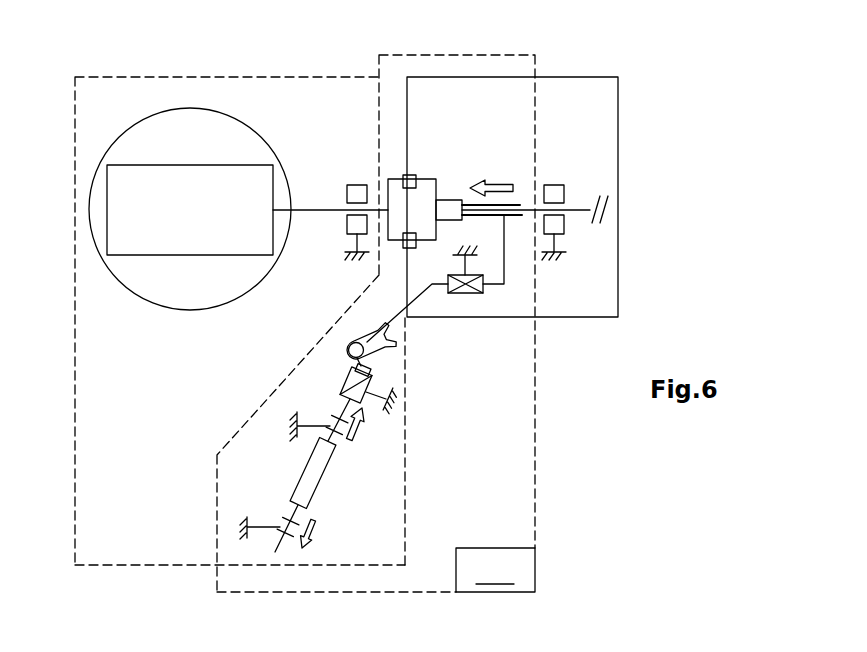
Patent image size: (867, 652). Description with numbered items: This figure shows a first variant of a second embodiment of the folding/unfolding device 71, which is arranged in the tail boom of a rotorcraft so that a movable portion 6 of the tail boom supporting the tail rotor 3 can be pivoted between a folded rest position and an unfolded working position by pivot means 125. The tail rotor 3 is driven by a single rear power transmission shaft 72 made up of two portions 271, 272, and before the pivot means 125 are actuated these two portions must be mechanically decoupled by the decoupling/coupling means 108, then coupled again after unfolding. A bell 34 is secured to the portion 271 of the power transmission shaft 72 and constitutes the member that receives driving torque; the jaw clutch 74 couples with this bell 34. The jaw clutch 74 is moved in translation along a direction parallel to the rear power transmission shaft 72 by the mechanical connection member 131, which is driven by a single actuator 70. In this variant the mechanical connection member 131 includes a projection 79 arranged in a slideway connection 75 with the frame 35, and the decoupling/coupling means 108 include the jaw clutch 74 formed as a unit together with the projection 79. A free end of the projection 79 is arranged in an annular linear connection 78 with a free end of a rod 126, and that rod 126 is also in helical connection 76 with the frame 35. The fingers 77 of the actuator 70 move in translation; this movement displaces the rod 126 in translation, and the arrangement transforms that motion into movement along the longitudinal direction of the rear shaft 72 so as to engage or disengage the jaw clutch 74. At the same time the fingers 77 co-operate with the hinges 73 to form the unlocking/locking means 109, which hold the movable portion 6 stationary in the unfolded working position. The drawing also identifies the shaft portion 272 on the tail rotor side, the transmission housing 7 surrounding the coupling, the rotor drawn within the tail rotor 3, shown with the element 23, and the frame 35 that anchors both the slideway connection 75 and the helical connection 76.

The tail rotor 3 is at (195, 123).
The rotor 23 is at (150, 177).
The movable portion 6 is at (85, 479).
The transmission module 7 is at (557, 308).
The bell 34 is at (403, 174).
The frame 35 is at (472, 248).
The actuator 70 is at (320, 480).
The folding/unfolding device 71 is at (535, 508).
The rear power transmission shaft 72 is at (578, 208).
The hinges 73 is at (358, 421).
The jaw clutch 74 is at (418, 176).
The slideway connection 75 is at (452, 294).
The helical connection 76 is at (372, 368).
The fingers 77 is at (330, 421).
The annular linear connection 78 is at (367, 330).
The projection 79 is at (503, 262).
The decoupling/coupling means 108 is at (507, 285).
The unlocking/locking means 109 is at (377, 497).
The pivot means 125 is at (495, 570).
The rod 126 is at (347, 360).
The mechanical connection member 131 is at (411, 388).
The portion of the power transmission shaft 271 is at (523, 206).
The portion of the power transmission shaft 272 is at (328, 210).